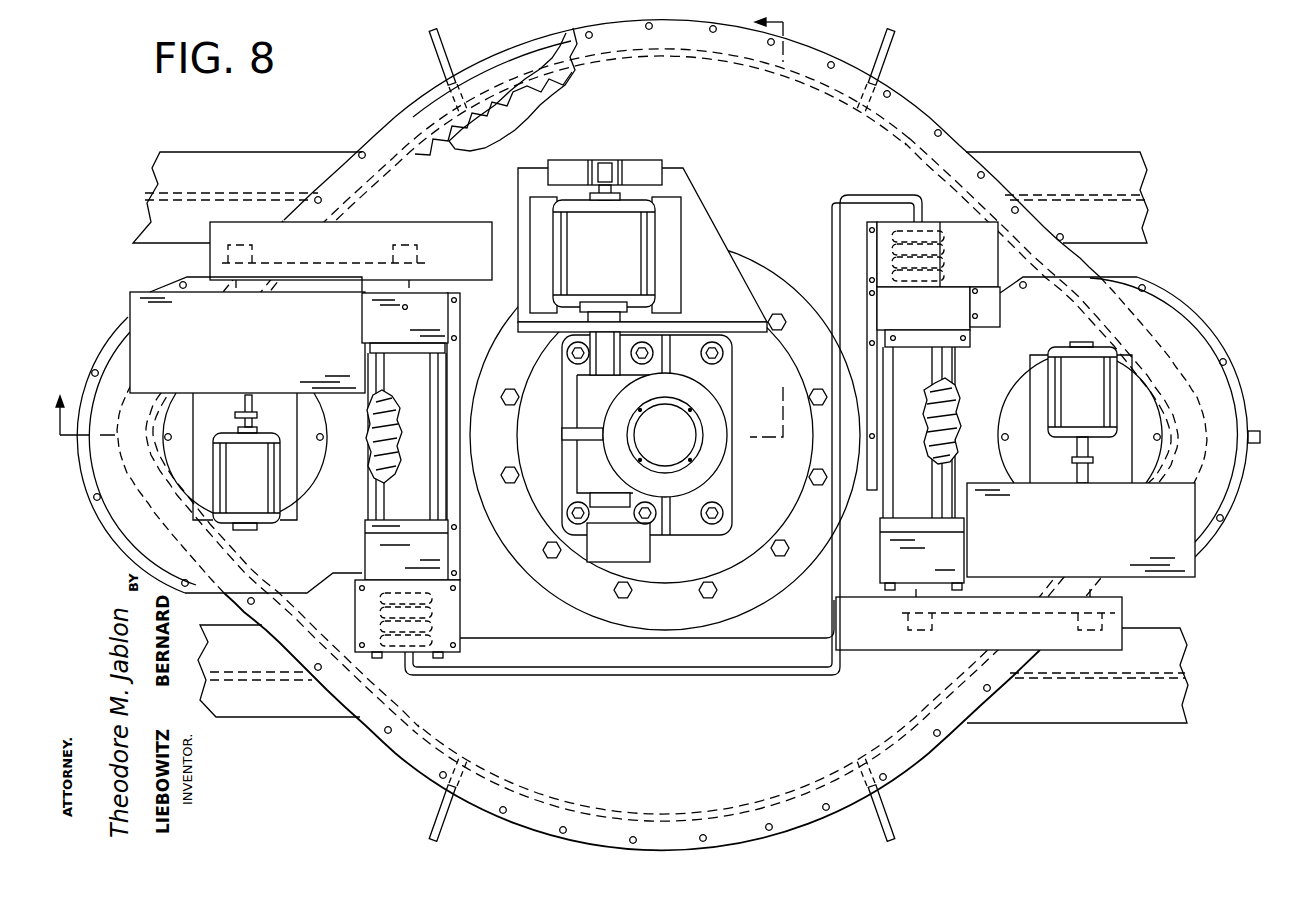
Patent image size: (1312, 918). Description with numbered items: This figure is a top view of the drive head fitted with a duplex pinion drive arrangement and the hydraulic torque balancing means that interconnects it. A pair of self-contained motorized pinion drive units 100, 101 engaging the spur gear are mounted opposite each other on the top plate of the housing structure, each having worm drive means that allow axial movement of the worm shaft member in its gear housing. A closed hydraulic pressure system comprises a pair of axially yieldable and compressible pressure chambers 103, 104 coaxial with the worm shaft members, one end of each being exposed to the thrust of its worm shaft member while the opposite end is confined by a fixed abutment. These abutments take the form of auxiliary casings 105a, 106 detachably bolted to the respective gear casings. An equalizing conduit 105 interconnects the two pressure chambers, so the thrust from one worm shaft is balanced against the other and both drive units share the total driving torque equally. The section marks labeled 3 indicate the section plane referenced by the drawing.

The motorized pinion drive unit 100 is at (1166, 295).
The motorized pinion drive unit 101 is at (131, 314).
The pressure chamber 103 is at (921, 259).
The pressure chamber 104 is at (402, 597).
The equalizing conduit 105 is at (829, 248).
The auxiliary casing 105a is at (957, 237).
The auxiliary casing 106 is at (446, 620).
The section line 3- 3 is at (433, 226).